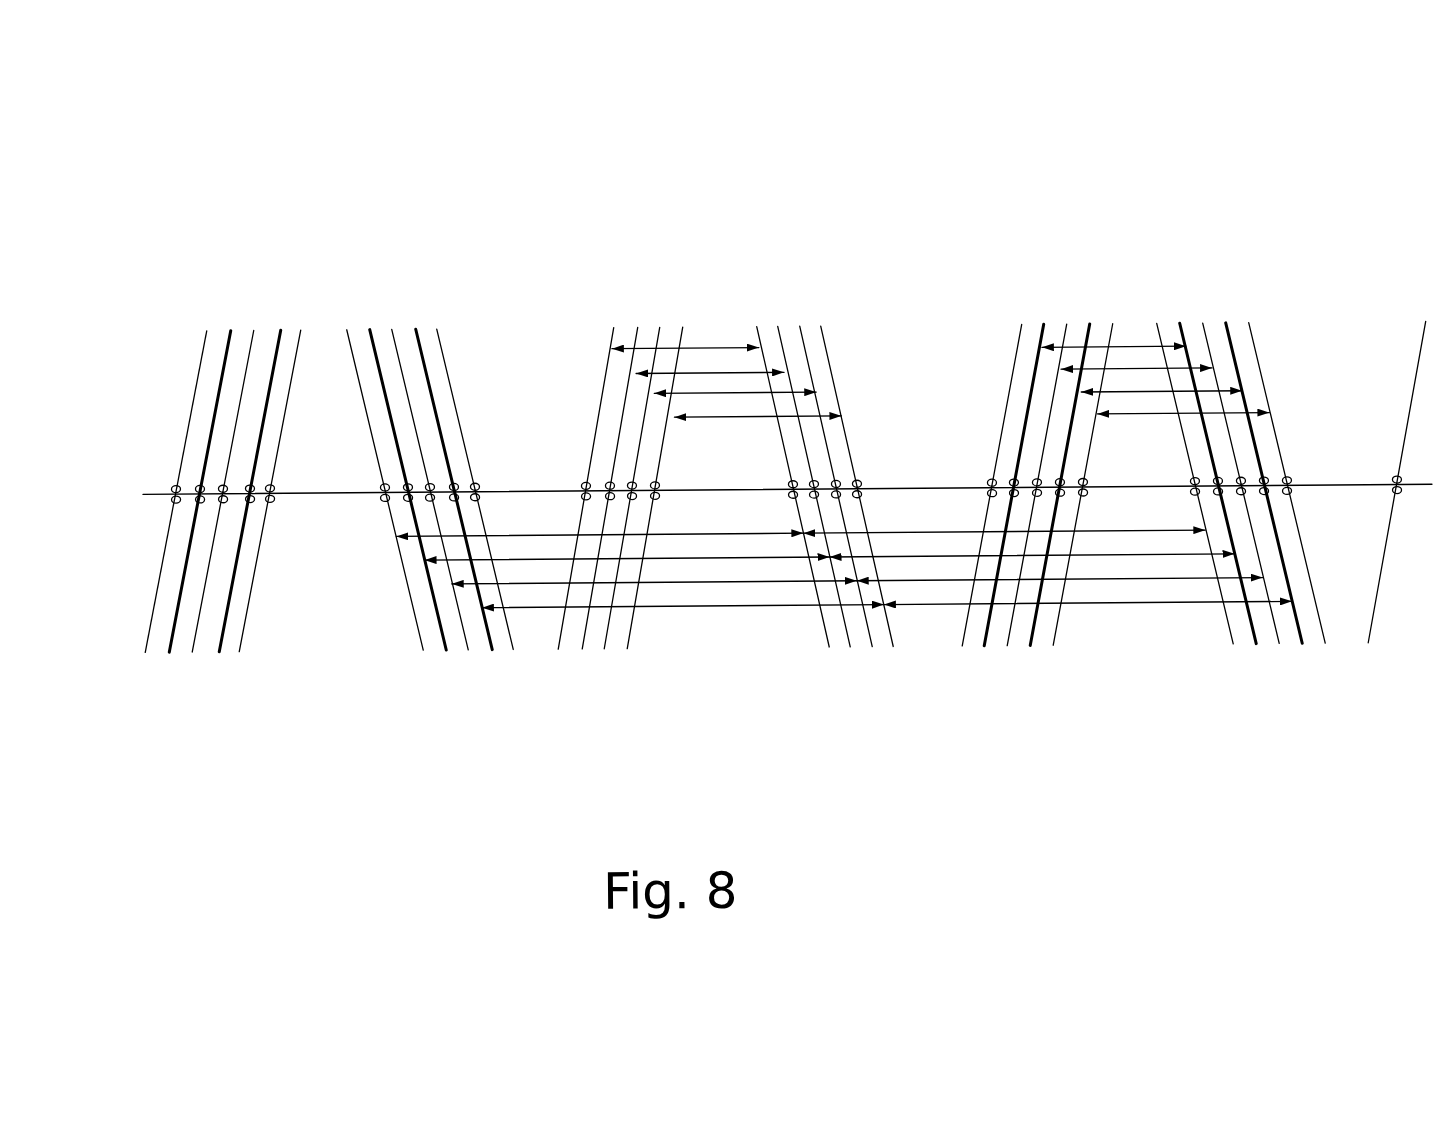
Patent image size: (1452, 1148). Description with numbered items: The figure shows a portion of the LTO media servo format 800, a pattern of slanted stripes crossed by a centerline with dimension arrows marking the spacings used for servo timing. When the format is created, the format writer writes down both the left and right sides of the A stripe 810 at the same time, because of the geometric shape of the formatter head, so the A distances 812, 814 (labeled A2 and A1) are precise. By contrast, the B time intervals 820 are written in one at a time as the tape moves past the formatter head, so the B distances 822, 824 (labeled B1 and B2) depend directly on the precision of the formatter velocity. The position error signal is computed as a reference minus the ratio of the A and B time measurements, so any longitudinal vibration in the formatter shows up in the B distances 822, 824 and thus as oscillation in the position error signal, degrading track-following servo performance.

The LTO media servo format 800 is at (833, 142).
The A stripe 810 is at (707, 307).
The A distance 812 is at (727, 345).
The A distance 814 is at (1127, 346).
The B time intervals 820 is at (908, 673).
The B distance 822 is at (1087, 610).
The B distance 824 is at (733, 607).